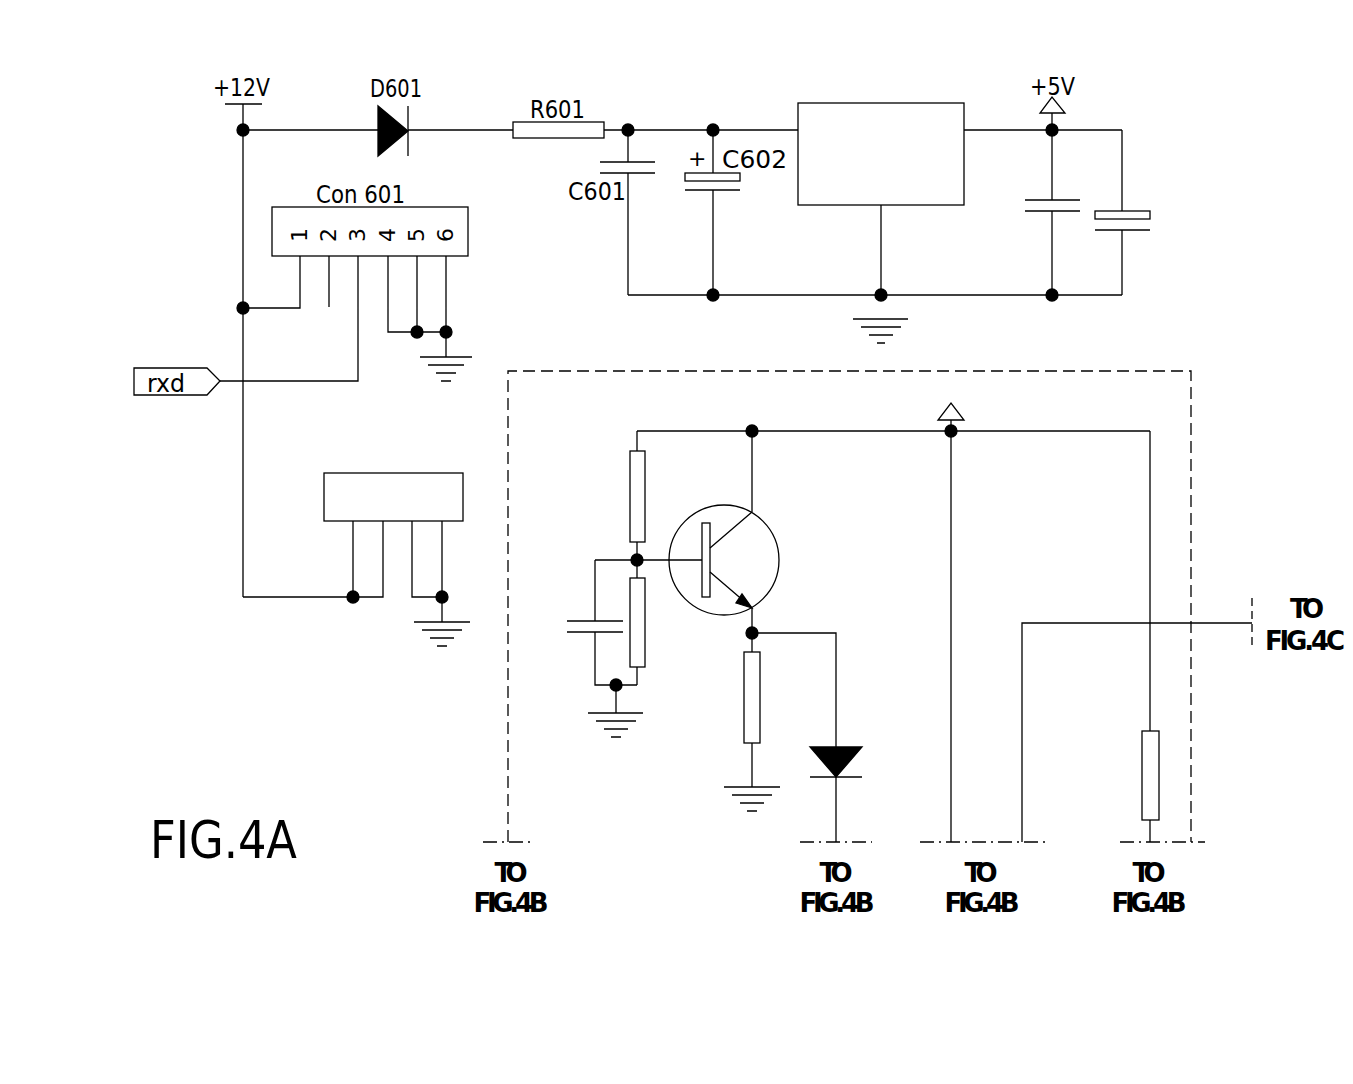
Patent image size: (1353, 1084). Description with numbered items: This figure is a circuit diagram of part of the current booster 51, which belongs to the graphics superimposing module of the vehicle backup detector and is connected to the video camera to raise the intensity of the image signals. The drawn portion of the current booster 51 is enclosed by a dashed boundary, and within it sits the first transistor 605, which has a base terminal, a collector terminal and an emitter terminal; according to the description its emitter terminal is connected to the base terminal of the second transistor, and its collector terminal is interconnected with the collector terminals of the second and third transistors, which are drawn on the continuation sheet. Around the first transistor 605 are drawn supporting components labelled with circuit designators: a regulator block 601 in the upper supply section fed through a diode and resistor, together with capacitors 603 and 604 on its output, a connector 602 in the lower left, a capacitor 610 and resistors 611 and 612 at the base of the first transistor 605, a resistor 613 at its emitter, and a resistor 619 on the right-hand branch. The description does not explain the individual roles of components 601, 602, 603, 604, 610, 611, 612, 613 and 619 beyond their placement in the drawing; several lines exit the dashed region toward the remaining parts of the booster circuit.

The current booster 51 is at (508, 746).
The voltage regulator U601 601 is at (879, 167).
The connector Con 602 is at (393, 483).
The capacitor C603 603 is at (1033, 192).
The capacitor C604 604 is at (1141, 205).
The first transistor 605 is at (749, 560).
The capacitor C610 610 is at (574, 609).
The resistor R611 611 is at (607, 496).
The resistor R612 612 is at (669, 622).
The resistor R613 613 is at (722, 697).
The resistor R619 619 is at (1119, 775).